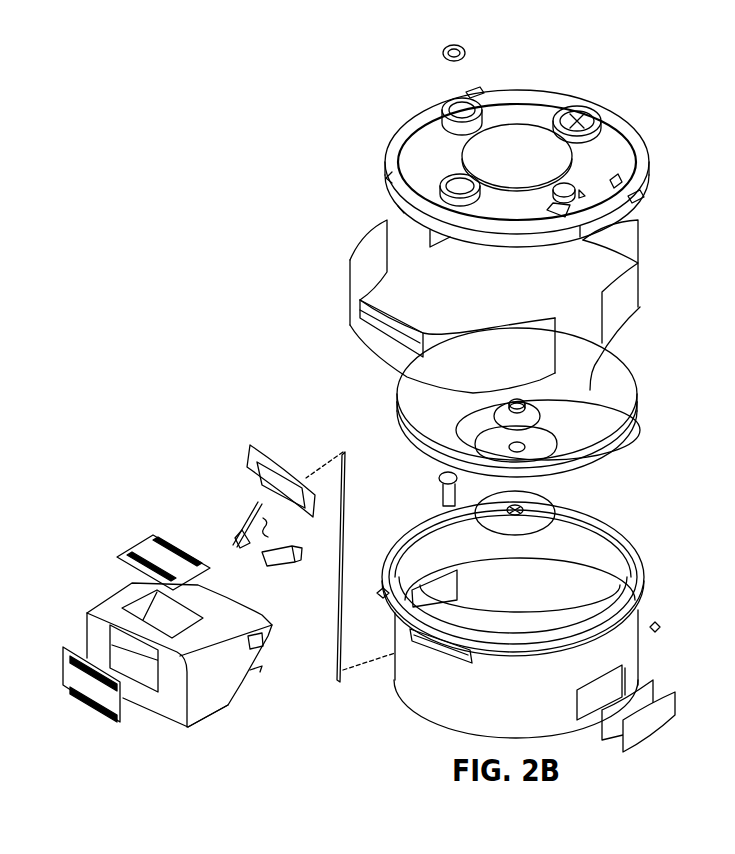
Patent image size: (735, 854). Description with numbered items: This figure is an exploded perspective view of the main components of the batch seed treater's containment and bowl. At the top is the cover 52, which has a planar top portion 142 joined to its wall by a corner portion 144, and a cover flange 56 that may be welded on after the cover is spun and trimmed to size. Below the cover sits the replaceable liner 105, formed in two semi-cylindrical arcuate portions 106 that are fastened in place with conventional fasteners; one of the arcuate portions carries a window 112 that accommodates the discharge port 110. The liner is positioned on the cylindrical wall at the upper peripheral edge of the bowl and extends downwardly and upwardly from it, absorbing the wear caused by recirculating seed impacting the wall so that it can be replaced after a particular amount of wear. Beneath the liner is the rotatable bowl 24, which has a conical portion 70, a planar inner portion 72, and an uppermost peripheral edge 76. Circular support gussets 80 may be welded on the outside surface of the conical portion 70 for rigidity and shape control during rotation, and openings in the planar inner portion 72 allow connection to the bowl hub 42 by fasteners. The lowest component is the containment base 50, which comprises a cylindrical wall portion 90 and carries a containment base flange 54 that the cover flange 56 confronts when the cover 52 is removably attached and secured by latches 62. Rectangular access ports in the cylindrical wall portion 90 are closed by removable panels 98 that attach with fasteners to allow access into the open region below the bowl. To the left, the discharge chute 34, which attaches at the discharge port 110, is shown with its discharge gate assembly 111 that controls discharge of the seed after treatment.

The planar top portion 142 is at (527, 107).
The cover 52 is at (600, 128).
The corner portion 144 is at (628, 167).
The cover flange 56 is at (640, 184).
The replaceable liner 105 is at (338, 341).
The arcuate portions 106 is at (352, 283).
The window 112 is at (357, 306).
The rotatable bowl 24 is at (637, 395).
The circular support gussets 80 is at (632, 427).
The uppermost peripheral edge 76 is at (632, 372).
The conical portion 70 is at (616, 350).
The planar inner portion 72 is at (573, 430).
The bowl hub 42 is at (541, 417).
The containment base flange 54 is at (645, 560).
The containment base 50 is at (640, 611).
The discharge port 110 is at (448, 650).
The latches 62 is at (382, 590).
The cylindrical wall portion 90 is at (397, 677).
The removable panels 98 is at (674, 718).
The discharge gate assembly 111 is at (230, 437).
The discharge chute 34 is at (203, 740).